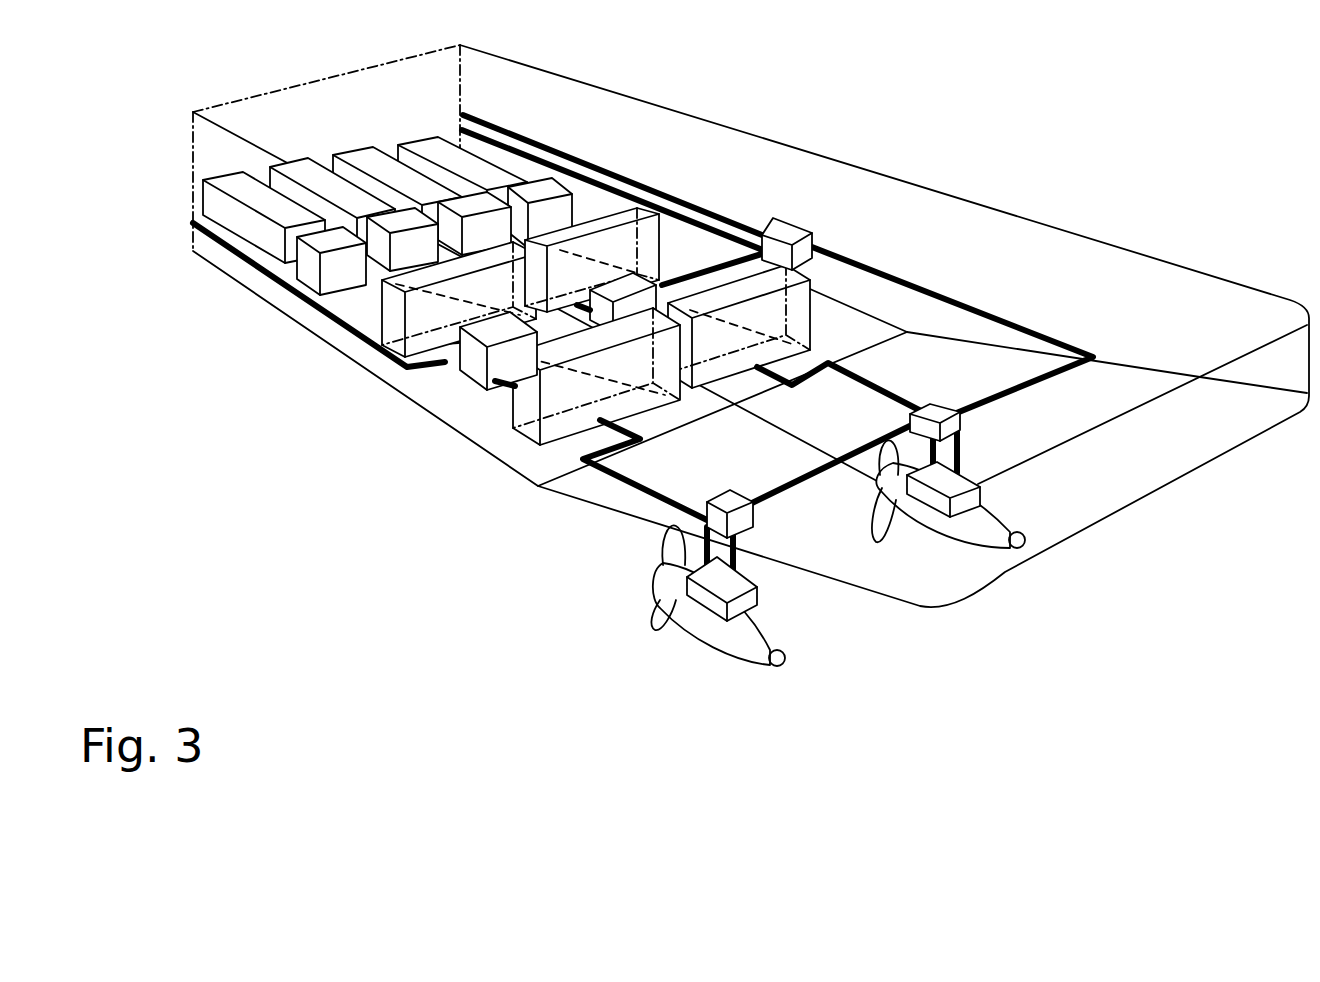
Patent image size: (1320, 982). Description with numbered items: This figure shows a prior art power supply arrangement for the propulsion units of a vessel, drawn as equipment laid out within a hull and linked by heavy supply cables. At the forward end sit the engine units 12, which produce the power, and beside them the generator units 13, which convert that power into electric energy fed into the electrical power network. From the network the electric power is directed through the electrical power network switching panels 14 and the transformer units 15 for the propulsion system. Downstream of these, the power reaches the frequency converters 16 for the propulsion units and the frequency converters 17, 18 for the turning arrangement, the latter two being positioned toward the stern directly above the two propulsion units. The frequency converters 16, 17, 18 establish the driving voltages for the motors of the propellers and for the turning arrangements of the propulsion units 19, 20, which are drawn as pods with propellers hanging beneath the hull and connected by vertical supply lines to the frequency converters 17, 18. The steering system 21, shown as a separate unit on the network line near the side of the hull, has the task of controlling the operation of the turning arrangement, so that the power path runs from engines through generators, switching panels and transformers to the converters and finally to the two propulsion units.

The engine units 12 is at (423, 142).
The generator units 13 is at (537, 187).
The electrical power network switching panels 14 is at (615, 222).
The transformer units for the propulsion system 15 is at (638, 289).
The frequency converters for the propulsion units 16 is at (805, 317).
The frequency converter for the turning arrangement 17 is at (745, 510).
The frequency converter for the turning arrangement 18 is at (948, 418).
The propulsion unit 19 is at (760, 643).
The propulsion unit 20 is at (993, 522).
The steering system 21 is at (785, 231).